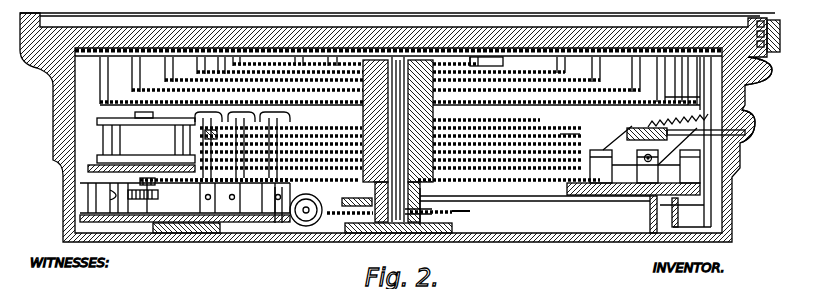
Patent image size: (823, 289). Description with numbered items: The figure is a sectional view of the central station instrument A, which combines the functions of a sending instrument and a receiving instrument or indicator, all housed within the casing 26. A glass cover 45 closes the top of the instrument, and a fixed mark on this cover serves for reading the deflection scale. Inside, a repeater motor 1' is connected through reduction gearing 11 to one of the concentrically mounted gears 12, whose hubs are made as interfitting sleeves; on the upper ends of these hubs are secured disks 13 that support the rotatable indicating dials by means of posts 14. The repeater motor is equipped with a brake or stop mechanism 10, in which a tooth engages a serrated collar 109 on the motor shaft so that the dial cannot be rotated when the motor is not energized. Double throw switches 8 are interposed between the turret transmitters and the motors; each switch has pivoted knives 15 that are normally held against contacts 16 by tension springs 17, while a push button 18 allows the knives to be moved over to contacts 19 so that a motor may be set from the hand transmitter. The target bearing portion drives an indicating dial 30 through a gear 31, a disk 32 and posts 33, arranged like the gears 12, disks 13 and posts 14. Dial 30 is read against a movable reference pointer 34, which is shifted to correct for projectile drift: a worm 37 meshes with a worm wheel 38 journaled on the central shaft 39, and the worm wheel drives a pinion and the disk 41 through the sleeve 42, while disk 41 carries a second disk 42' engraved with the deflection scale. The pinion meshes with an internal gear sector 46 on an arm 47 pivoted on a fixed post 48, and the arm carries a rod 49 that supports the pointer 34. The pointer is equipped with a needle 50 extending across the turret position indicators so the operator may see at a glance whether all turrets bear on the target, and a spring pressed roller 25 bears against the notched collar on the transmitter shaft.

The central station instrument A is at (53, 142).
The glass cover 45 is at (573, 32).
The needle 50 is at (657, 48).
The spring pressed roller 25 is at (732, 48).
The casing 26 is at (748, 74).
The push button 18 is at (749, 123).
The sleeve 42' is at (398, 116).
The posts 14 is at (133, 71).
The disks 13 is at (432, 75).
The disk 41 is at (492, 62).
The indicating dial 30 is at (683, 62).
The posts 33 is at (690, 82).
The movable reference pointer 34 is at (701, 72).
The tension springs 17 is at (708, 113).
The repeater motor 1' is at (141, 142).
The brake or stop mechanism 10 is at (89, 199).
The serrated collar 109 is at (151, 196).
The reduction gearing 11 is at (185, 206).
The concentrically mounted gears 12 is at (586, 141).
The disk 32 is at (553, 110).
The gear 31 is at (567, 134).
The double throw switches 8 is at (674, 139).
The contacts 19 is at (613, 166).
The pivoted knives 15 is at (648, 165).
The contacts 16 is at (634, 172).
The arm 47 is at (535, 207).
The fixed post 48 is at (652, 228).
The rod 49 is at (691, 216).
The worm 37 is at (309, 206).
The sleeve 42 is at (351, 198).
The central shaft 39 is at (416, 190).
The internal gear sector 46 is at (457, 200).
The worm wheel 38 is at (470, 214).